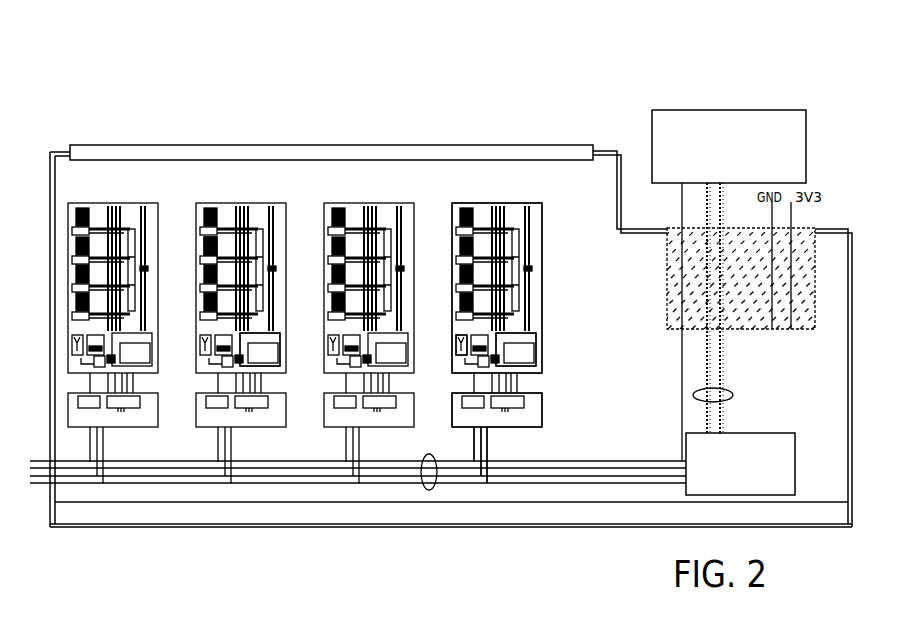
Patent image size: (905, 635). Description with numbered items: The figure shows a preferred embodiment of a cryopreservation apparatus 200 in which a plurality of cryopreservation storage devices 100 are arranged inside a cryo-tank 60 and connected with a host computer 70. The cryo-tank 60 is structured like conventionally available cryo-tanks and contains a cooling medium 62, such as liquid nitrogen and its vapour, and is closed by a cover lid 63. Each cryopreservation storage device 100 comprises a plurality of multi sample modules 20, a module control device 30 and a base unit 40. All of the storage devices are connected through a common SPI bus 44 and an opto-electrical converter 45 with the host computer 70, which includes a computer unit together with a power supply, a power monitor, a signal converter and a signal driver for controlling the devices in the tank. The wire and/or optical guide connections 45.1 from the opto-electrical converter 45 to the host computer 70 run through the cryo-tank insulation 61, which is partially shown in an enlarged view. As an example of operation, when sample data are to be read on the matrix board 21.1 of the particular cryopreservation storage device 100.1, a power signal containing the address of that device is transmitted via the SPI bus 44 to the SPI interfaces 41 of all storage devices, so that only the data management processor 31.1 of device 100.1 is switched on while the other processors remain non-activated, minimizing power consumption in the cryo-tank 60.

The cryopreservation apparatus 200 is at (451, 314).
The cryopreservation storage device 100 is at (475, 189).
The cryopreservation storage device 100.1 is at (242, 188).
The multi sample module 20 is at (490, 232).
The matrix board 21.1 is at (205, 240).
The module control device 30 is at (547, 333).
The data management processor 31.1 is at (270, 353).
The base unit 40 is at (547, 388).
The SPI interface 41 is at (497, 420).
The SPI bus 44 is at (432, 490).
The opto-electrical converter 45 is at (782, 471).
The wire and/or optical guide connections 45.1 is at (733, 397).
The cryo-tank 60 is at (412, 527).
The cryo-tank insulation 61 is at (733, 320).
The cooling medium 62 is at (303, 516).
The cover lid 63 is at (130, 152).
The host computer 70 is at (790, 171).